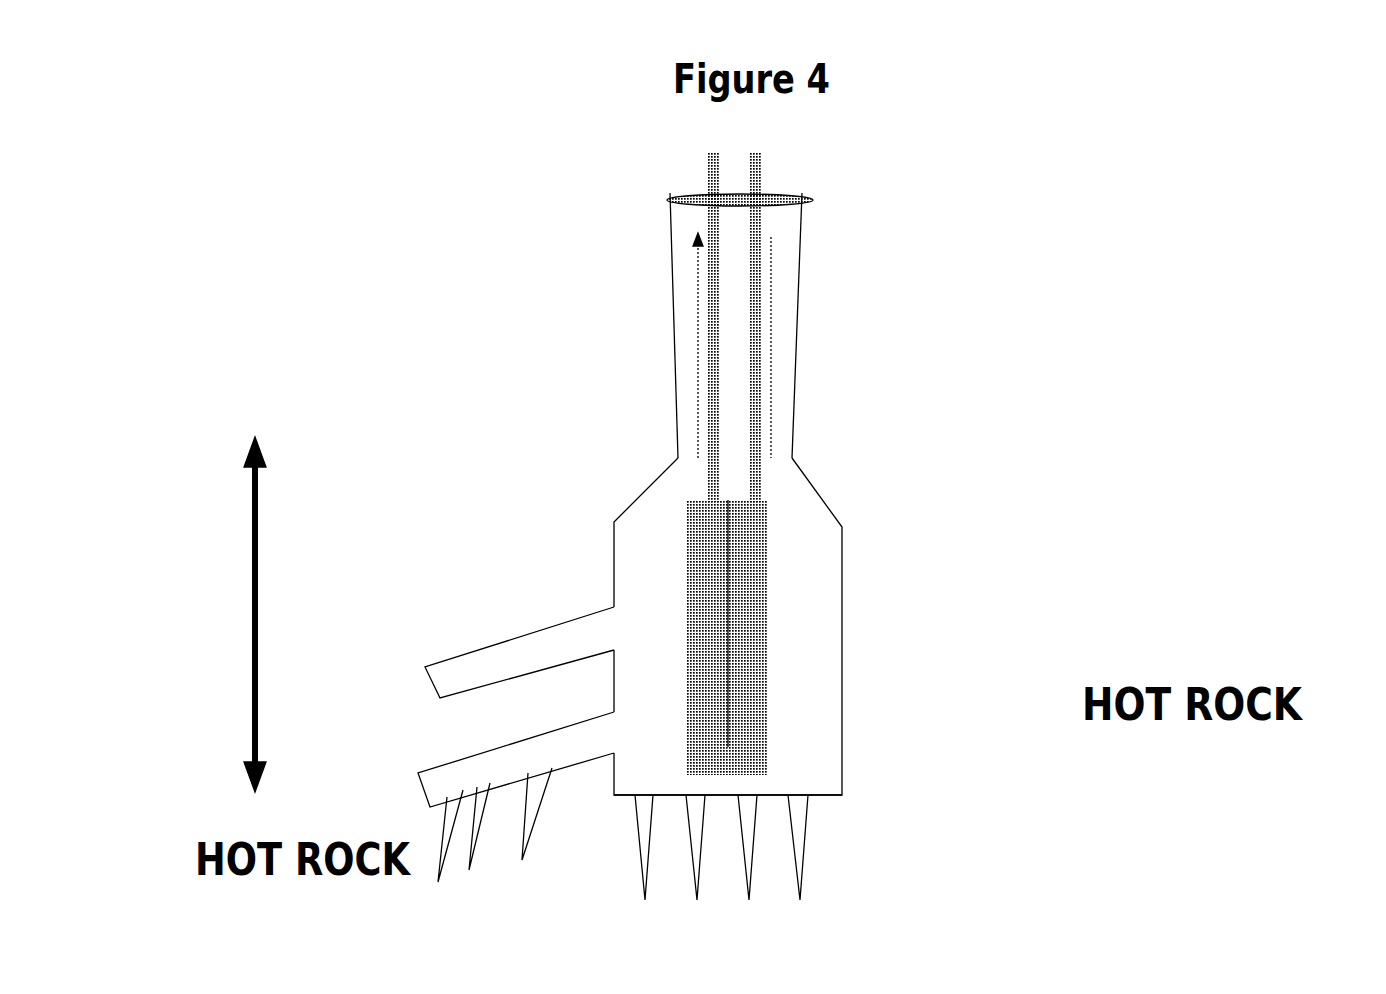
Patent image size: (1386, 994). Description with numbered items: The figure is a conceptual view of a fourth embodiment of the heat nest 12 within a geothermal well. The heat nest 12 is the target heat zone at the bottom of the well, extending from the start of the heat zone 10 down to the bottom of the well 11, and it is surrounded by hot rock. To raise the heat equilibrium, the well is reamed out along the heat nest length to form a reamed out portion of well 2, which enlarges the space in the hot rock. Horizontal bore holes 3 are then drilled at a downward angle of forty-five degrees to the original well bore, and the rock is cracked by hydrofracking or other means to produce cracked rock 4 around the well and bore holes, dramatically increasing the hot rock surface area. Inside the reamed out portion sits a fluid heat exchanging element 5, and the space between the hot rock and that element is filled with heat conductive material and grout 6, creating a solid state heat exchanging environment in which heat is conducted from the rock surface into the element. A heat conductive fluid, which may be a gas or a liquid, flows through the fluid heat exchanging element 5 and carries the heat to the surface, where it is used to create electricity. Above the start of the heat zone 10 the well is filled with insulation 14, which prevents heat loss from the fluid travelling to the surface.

The reamed out portion of well 2 is at (827, 602).
The horizontal bore holes 3 is at (447, 724).
The cracked rock 4 is at (575, 813).
The fluid heat exchanging element 5 is at (782, 522).
The heat conductive material and grout 6 is at (499, 788).
The start of heat zone 10 is at (643, 457).
The bottom of well 11 is at (867, 766).
The heat nest 12 is at (219, 614).
The insulation 14 is at (666, 295).